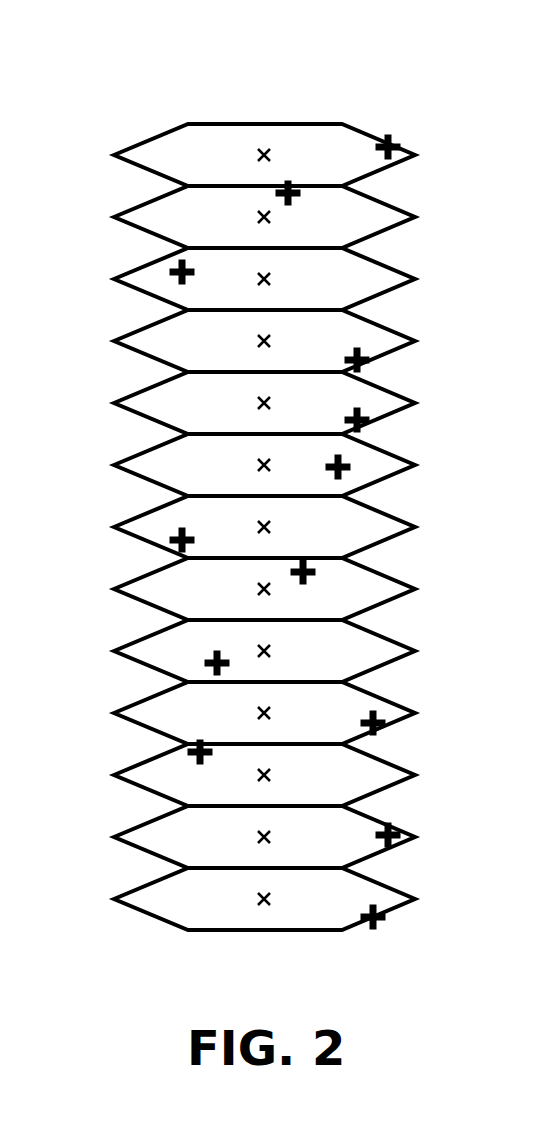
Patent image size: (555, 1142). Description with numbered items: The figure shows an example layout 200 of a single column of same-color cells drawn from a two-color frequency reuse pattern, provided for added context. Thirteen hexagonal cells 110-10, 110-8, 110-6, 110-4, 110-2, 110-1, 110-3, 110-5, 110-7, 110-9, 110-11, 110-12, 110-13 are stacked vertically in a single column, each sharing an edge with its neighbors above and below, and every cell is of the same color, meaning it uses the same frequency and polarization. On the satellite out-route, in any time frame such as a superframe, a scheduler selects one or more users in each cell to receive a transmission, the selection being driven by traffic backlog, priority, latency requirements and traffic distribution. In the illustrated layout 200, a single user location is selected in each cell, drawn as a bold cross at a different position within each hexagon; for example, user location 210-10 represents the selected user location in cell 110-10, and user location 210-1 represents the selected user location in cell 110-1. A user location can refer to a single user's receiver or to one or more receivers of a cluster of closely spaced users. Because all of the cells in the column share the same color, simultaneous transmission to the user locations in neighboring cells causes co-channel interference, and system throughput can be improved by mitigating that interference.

The layout 200 is at (108, 66).
The cell 110-1 is at (297, 459).
The cell 110-2 is at (264, 403).
The cell 110-3 is at (264, 527).
The cell 110-4 is at (264, 341).
The cell 110-5 is at (264, 589).
The cell 110-6 is at (264, 279).
The cell 110-7 is at (264, 651).
The cell 110-8 is at (264, 215).
The cell 110-9 is at (264, 713).
The cell 110-10 is at (303, 150).
The cell 110-11 is at (264, 773).
The cell 110-12 is at (264, 837).
The cell 110-13 is at (264, 899).
The user location 210-1 is at (346, 463).
The user location 210-10 is at (392, 145).